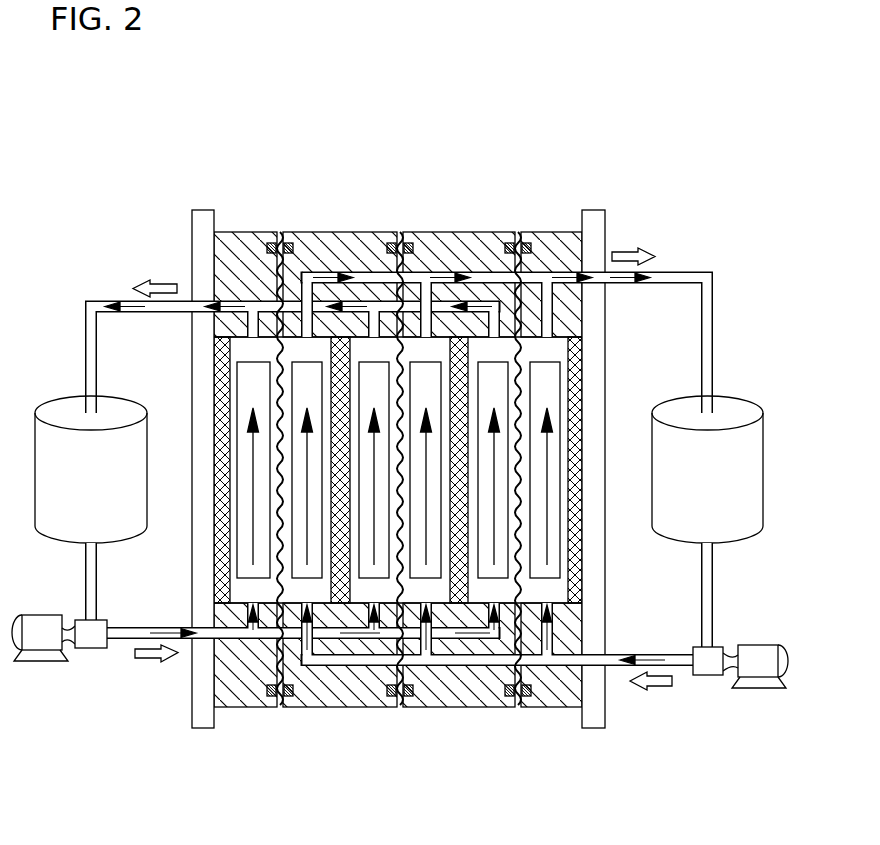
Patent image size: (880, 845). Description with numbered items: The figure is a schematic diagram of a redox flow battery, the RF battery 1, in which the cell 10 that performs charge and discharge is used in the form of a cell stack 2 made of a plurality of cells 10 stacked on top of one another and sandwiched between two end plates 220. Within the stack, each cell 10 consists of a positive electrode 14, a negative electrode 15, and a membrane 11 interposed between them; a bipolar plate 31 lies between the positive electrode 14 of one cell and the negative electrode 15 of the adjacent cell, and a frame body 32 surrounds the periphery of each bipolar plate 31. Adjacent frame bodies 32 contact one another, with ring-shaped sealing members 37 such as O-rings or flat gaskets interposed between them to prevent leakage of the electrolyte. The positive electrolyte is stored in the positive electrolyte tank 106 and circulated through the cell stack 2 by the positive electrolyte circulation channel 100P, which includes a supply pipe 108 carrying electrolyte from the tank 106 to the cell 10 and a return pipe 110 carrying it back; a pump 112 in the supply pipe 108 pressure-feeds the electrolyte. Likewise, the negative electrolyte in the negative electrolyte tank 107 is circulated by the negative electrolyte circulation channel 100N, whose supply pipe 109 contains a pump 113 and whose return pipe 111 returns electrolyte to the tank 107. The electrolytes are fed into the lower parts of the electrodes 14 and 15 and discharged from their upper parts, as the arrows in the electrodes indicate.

The RF battery 1 is at (66, 122).
The cell stack 2 is at (590, 183).
The cell 10 is at (244, 604).
The membrane 11 is at (281, 600).
The positive electrode 14 is at (367, 540).
The negative electrode 15 is at (303, 555).
The bipolar plate 31 is at (333, 350).
The frame body 32 is at (238, 233).
The sealing member 37 is at (285, 243).
The positive electrolyte tank 106 is at (50, 404).
The negative electrolyte tank 107 is at (747, 404).
The supply pipe 108 is at (123, 640).
The supply pipe 109 is at (678, 663).
The return pipe 110 is at (102, 304).
The return pipe 111 is at (697, 274).
The pump 112 is at (30, 615).
The pump 113 is at (760, 644).
The positive electrolyte circulation channel 100P is at (73, 676).
The negative electrolyte circulation channel 100N is at (726, 688).
The end plate 220 is at (200, 716).